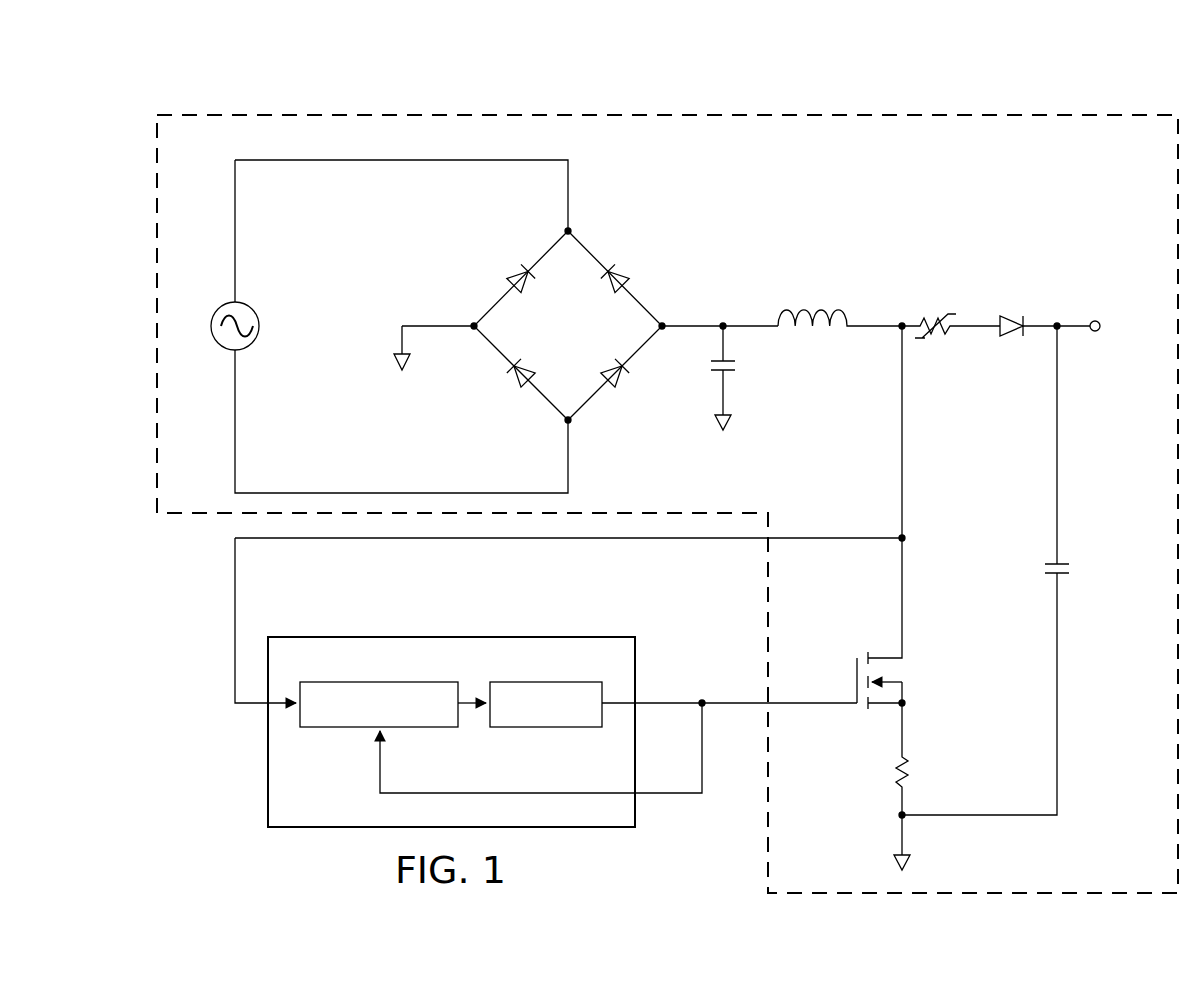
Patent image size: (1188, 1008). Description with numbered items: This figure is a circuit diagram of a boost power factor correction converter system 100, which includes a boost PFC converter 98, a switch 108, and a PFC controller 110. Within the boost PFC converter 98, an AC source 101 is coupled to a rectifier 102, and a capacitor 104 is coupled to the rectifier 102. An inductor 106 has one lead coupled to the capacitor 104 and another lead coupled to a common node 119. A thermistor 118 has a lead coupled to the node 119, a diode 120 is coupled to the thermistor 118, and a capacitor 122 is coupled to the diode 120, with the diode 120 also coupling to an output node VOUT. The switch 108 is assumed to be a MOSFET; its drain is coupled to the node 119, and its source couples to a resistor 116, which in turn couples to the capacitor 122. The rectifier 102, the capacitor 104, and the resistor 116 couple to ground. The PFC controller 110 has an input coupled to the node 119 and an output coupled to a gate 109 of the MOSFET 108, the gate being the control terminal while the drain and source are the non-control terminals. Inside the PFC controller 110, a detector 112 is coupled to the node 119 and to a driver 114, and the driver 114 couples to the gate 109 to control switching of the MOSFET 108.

The boost PFC converter 98 is at (531, 112).
The boost PFC converter system 100 is at (946, 79).
The AC source 101 is at (224, 308).
The rectifier 102 is at (499, 250).
The capacitor 104 is at (737, 367).
The inductor 106 is at (821, 307).
The switch 108 is at (929, 644).
The gate 109 is at (852, 668).
The PFC controller 110 is at (410, 634).
The detector 112 is at (352, 729).
The driver 114 is at (547, 729).
The resistor 116 is at (911, 771).
The thermistor 118 is at (932, 318).
The common node 119 is at (897, 340).
The diode 120 is at (1011, 316).
The capacitor 122 is at (1070, 570).